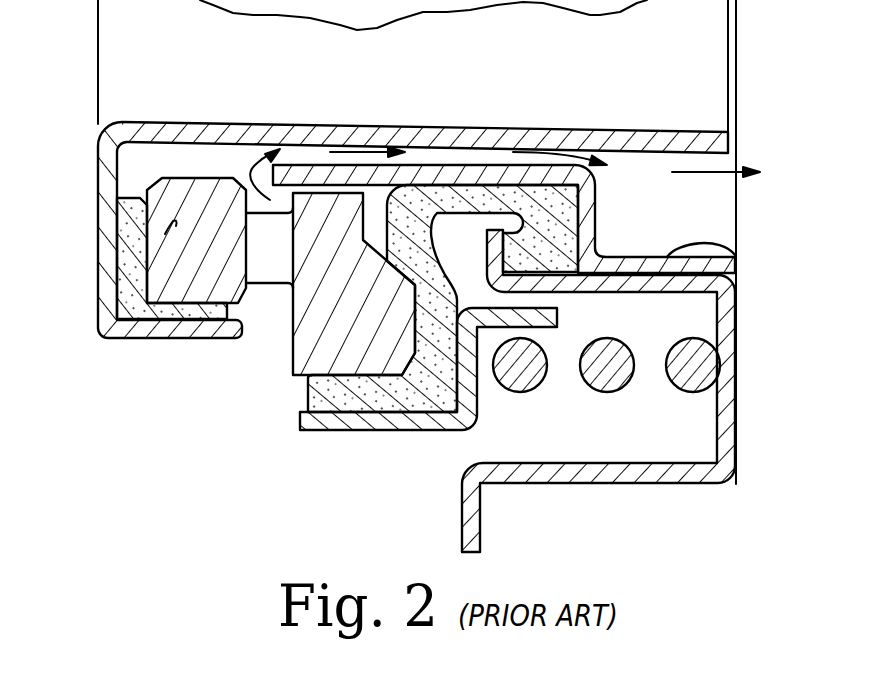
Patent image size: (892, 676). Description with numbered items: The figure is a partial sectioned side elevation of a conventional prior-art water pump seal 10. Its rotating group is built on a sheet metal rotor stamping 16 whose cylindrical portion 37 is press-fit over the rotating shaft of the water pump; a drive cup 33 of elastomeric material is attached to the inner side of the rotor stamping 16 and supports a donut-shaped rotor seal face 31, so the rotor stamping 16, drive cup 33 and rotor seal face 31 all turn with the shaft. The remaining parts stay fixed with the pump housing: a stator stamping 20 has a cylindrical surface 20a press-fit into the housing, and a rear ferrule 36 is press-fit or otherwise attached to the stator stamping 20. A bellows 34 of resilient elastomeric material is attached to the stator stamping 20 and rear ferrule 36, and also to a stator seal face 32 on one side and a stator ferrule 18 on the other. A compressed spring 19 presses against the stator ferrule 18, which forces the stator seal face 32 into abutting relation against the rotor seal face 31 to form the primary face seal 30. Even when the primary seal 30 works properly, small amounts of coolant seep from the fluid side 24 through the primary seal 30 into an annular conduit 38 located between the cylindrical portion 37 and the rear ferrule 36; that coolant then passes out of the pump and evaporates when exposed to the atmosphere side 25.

The water pump seal 10 is at (374, 239).
The rotor stamping 16 is at (113, 334).
The stator ferrule 18 is at (430, 430).
The spring 19 is at (618, 393).
The stator stamping 20 is at (660, 484).
The cylindrical surface 20a is at (520, 483).
The fluid side 24 is at (168, 389).
The atmosphere side 25 is at (782, 216).
The primary face seal 30 is at (205, 240).
The rotor seal face 31 is at (165, 234).
The stator seal face 32 is at (328, 292).
The drive cup 33 is at (130, 310).
The bellows 34 is at (386, 405).
The rear ferrule 36 is at (735, 254).
The cylindrical portion 37 is at (300, 127).
The annular conduit 38 is at (472, 157).